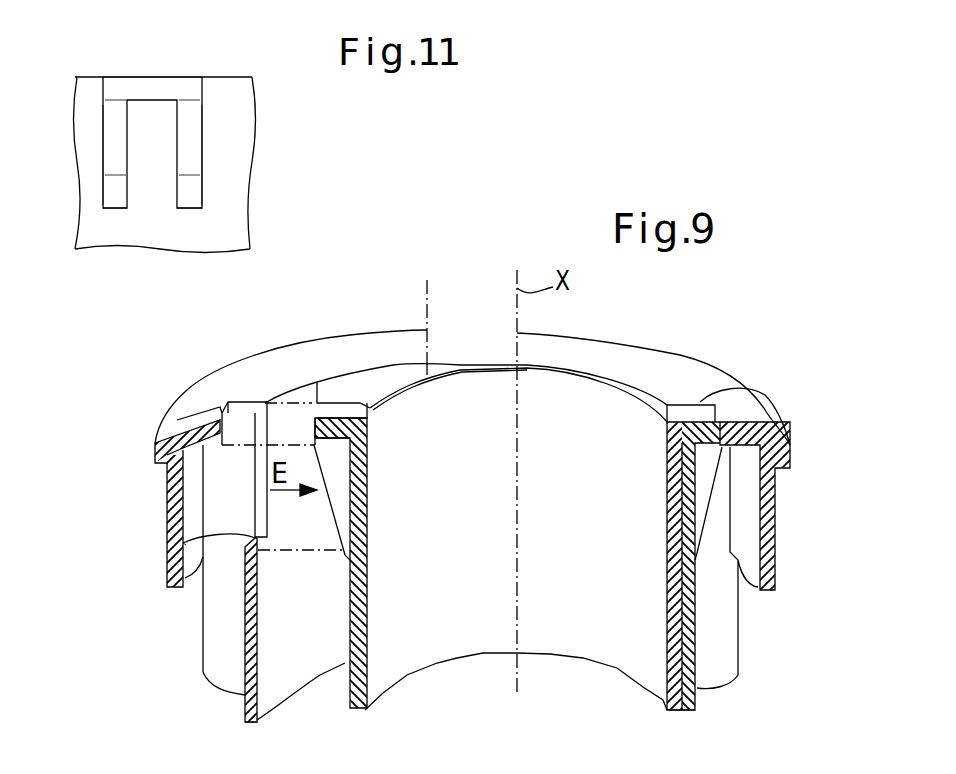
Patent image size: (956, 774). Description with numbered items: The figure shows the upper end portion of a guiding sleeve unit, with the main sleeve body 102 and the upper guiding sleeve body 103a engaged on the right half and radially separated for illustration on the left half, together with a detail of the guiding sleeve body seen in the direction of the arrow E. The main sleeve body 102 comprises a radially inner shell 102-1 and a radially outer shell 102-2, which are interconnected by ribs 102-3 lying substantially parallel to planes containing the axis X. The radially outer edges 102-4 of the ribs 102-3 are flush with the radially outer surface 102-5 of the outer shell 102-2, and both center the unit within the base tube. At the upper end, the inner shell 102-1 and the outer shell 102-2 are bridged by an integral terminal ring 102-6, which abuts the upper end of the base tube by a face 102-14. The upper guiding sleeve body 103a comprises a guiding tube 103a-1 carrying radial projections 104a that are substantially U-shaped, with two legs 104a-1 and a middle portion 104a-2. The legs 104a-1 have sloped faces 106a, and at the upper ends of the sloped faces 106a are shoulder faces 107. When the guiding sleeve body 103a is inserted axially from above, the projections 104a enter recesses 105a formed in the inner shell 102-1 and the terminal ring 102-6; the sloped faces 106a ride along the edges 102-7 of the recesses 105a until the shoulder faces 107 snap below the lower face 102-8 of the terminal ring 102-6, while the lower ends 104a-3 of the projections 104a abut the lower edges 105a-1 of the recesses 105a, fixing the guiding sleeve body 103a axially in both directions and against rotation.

In FIG. 9, the main sleeve body 102 is at (703, 661).
In FIG. 9, the radially inner shell 102-1 is at (693, 710).
In FIG. 9, the radially outer shell 102-2 is at (765, 522).
In FIG. 9, the ribs 102-3 is at (725, 637).
In FIG. 9, the radially outer edges 102-4 is at (740, 608).
In FIG. 9, the radially outer surface 102-5 is at (778, 499).
In FIG. 9, the terminal ring 102-6 is at (180, 428).
In FIG. 9, the edges 102-7 is at (227, 405).
In FIG. 9, the lower face 102-8 is at (153, 452).
In FIG. 9, the face 102-14 is at (163, 468).
In FIG. 9, the upper guiding sleeve body 103a is at (458, 658).
In FIG. 9, the guiding tube 103a-1 is at (365, 710).
In FIG. 11, the radial projections 104a is at (188, 78).
In FIG. 9, the radial projections 104a is at (697, 482).
In FIG. 11, the legs 104a-1 is at (203, 142).
In FIG. 11, the middle portion 104a-2 is at (148, 84).
In FIG. 11, the lower ends 104a-3 is at (184, 210).
In FIG. 9, the lower ends 104a-3 is at (352, 563).
In FIG. 9, the recesses 105a is at (700, 402).
In FIG. 9, the lower edges 105a-1 is at (183, 543).
In FIG. 11, the sloped faces 106a is at (188, 178).
In FIG. 9, the sloped faces 106a is at (325, 525).
In FIG. 11, the shoulder faces 107 is at (192, 100).
In FIG. 9, the shoulder faces 107 is at (313, 443).